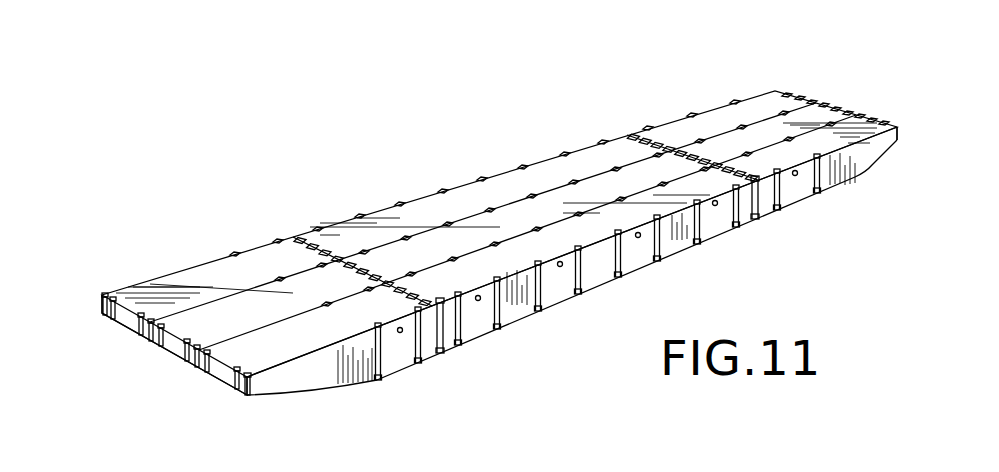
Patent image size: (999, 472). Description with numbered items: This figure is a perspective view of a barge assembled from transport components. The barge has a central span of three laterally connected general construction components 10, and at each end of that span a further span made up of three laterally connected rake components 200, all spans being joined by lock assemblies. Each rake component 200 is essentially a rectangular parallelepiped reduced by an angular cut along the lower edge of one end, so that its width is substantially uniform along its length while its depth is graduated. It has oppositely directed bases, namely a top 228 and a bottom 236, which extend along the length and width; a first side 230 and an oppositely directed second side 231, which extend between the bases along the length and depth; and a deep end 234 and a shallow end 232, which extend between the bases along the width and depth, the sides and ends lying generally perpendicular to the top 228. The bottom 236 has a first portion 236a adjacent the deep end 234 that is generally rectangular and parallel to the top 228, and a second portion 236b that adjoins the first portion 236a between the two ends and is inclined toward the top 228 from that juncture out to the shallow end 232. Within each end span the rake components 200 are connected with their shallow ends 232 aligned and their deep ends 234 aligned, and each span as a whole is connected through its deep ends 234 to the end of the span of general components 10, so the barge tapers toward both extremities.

The general construction component 10 is at (537, 198).
The rake component 200 is at (280, 333).
The second side 231 is at (307, 308).
The top 228 is at (178, 336).
The shallow end 232 is at (220, 373).
The first side 230 is at (333, 369).
The deep end 234 is at (443, 330).
The bottom 236 is at (392, 365).
The first portion of bottom 236a is at (462, 347).
The second portion of bottom 236b is at (320, 389).